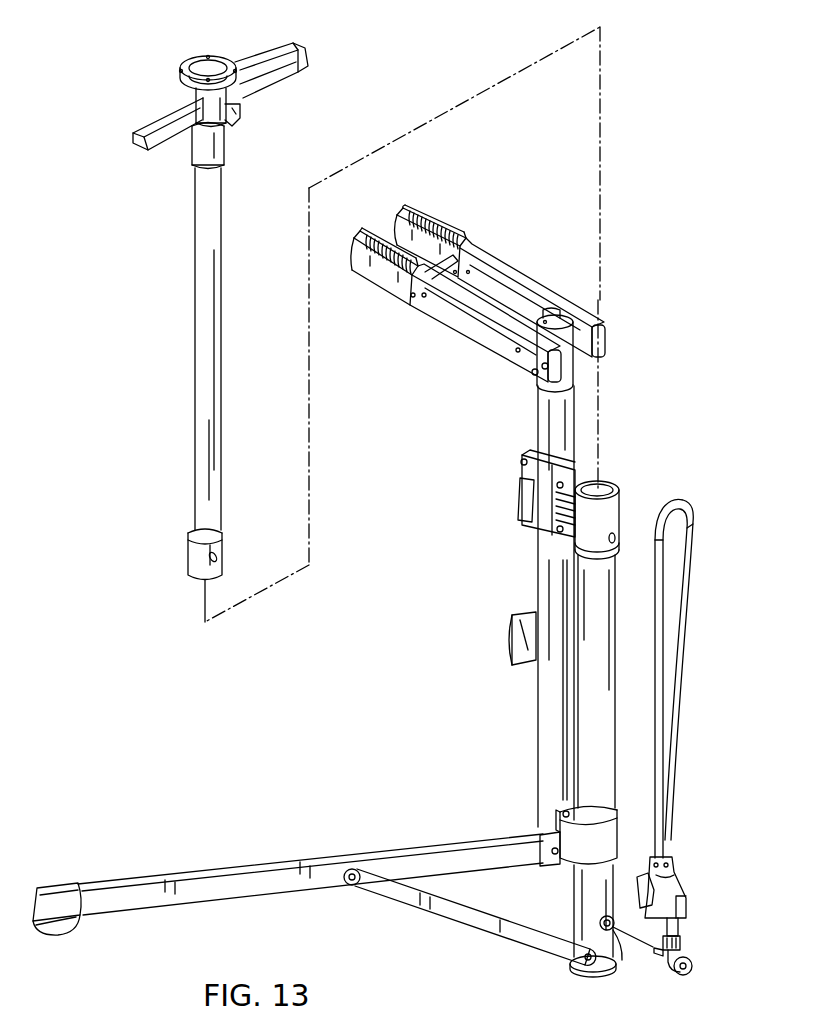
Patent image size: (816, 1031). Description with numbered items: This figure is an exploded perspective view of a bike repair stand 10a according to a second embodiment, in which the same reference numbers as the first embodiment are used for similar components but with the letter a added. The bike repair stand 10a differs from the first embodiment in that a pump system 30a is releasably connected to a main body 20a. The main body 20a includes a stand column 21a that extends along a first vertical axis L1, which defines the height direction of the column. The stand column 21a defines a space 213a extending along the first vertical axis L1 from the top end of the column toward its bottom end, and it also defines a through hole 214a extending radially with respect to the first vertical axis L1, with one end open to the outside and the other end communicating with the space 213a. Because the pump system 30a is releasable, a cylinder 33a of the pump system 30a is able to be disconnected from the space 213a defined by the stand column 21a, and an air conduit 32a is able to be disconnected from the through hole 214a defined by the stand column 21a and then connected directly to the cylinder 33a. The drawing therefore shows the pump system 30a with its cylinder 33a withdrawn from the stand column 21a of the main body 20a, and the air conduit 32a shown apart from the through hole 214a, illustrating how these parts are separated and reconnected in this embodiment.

The bike repair stand 10a is at (400, 117).
The main body 20a is at (668, 413).
The stand column 21a is at (615, 672).
The space 213a is at (604, 485).
The through hole 214a is at (614, 930).
The pump system 30a is at (165, 66).
The air conduit 32a is at (658, 789).
The cylinder 33a is at (200, 341).
The first vertical axis L1 is at (600, 386).